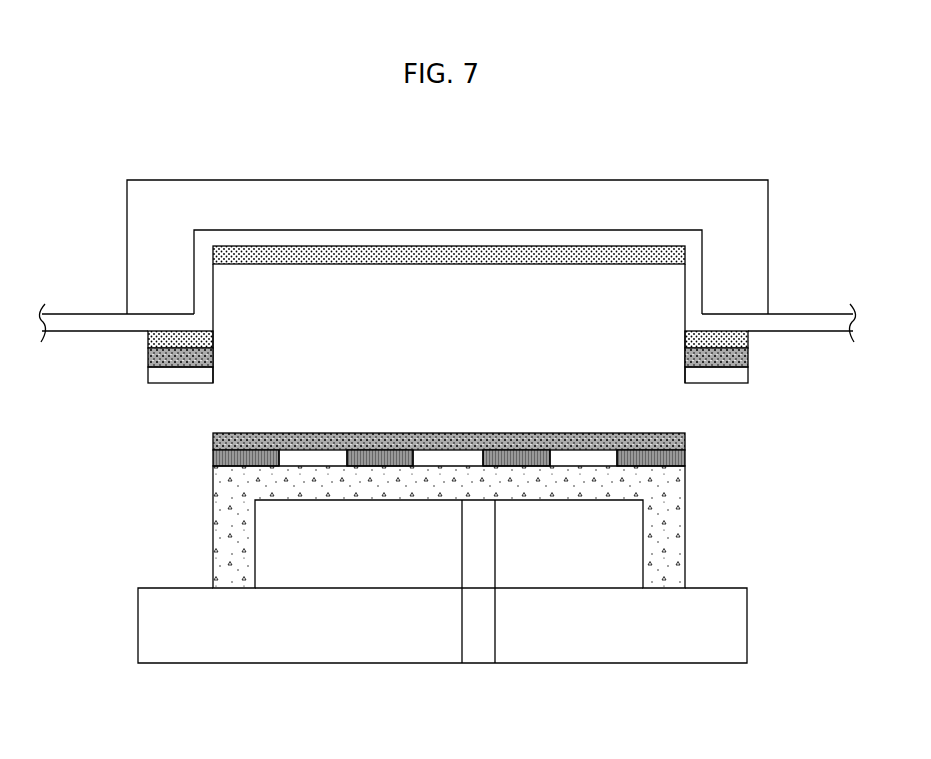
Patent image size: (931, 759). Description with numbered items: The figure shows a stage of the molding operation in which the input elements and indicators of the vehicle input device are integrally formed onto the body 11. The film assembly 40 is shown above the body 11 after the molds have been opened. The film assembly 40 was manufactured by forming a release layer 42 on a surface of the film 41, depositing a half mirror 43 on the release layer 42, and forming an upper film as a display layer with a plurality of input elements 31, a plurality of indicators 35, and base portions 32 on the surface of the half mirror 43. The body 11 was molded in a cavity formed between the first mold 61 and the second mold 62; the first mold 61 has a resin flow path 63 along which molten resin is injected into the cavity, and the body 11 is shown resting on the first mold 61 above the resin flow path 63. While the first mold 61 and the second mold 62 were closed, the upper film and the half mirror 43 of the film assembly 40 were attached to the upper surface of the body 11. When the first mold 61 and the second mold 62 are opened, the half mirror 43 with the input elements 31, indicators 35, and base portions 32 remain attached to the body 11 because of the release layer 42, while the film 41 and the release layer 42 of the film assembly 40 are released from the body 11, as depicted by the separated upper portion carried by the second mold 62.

The body 11 is at (234, 568).
The input elements 31 is at (380, 456).
The base portions 32 is at (313, 442).
The indicators 35 is at (243, 456).
The film assembly 40 is at (528, 222).
The film 41 is at (411, 238).
The release layer 42 is at (365, 255).
The half mirror 43 is at (688, 442).
The first mold 61 is at (728, 636).
The second mold 62 is at (748, 207).
The resin flow path 63 is at (478, 650).